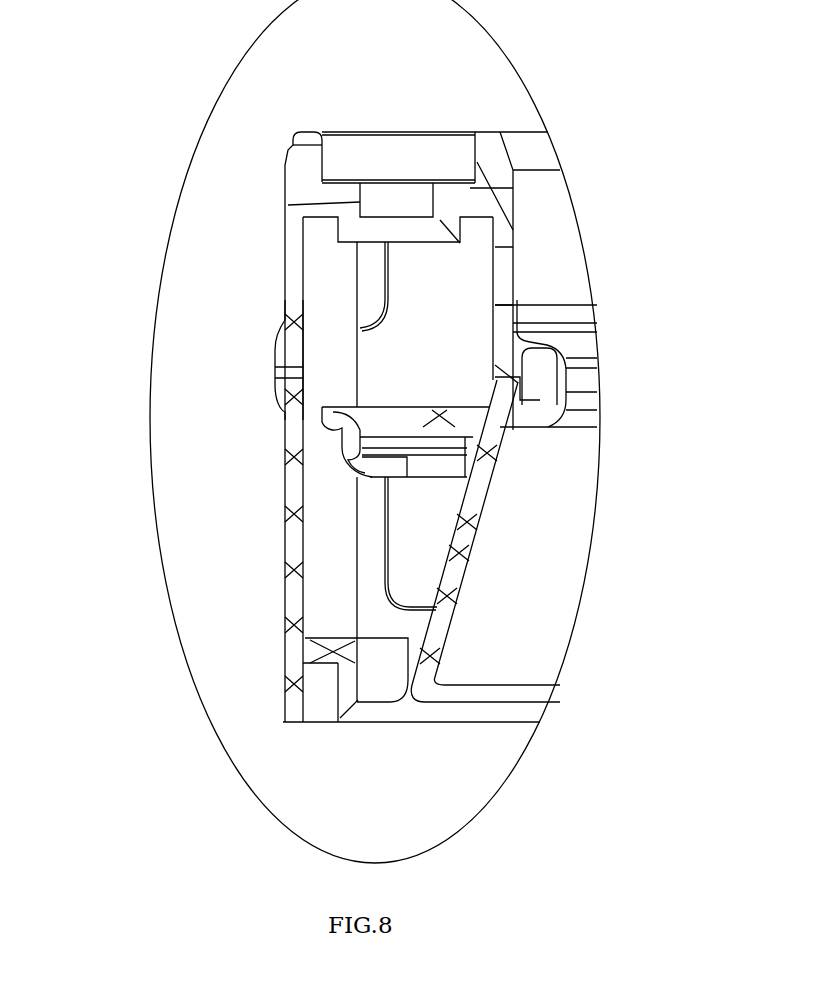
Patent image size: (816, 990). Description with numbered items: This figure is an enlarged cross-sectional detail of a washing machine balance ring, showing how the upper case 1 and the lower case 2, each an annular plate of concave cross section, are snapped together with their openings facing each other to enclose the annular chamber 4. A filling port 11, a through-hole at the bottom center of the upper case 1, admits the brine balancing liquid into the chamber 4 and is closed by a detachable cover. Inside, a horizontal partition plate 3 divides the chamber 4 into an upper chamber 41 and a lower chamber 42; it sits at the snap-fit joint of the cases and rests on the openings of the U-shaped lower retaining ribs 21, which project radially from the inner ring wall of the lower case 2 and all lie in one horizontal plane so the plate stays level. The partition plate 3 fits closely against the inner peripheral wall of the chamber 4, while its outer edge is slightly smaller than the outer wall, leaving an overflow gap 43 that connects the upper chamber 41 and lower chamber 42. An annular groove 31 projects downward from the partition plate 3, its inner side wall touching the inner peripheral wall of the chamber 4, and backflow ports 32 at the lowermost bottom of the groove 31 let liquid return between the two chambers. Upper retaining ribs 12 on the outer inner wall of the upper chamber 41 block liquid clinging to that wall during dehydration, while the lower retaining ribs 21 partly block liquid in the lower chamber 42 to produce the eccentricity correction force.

The upper case 1 is at (290, 268).
The filling port 11 is at (395, 163).
The upper retaining rib 12 is at (290, 312).
The lower case 2 is at (294, 482).
The lower retaining rib 21 is at (373, 528).
The partition plate 3 is at (538, 501).
The groove 31 is at (393, 415).
The backflow port 32 is at (457, 495).
The chamber 4 is at (371, 378).
The upper chamber 41 is at (432, 325).
The lower chamber 42 is at (415, 552).
The overflow gap 43 is at (313, 416).